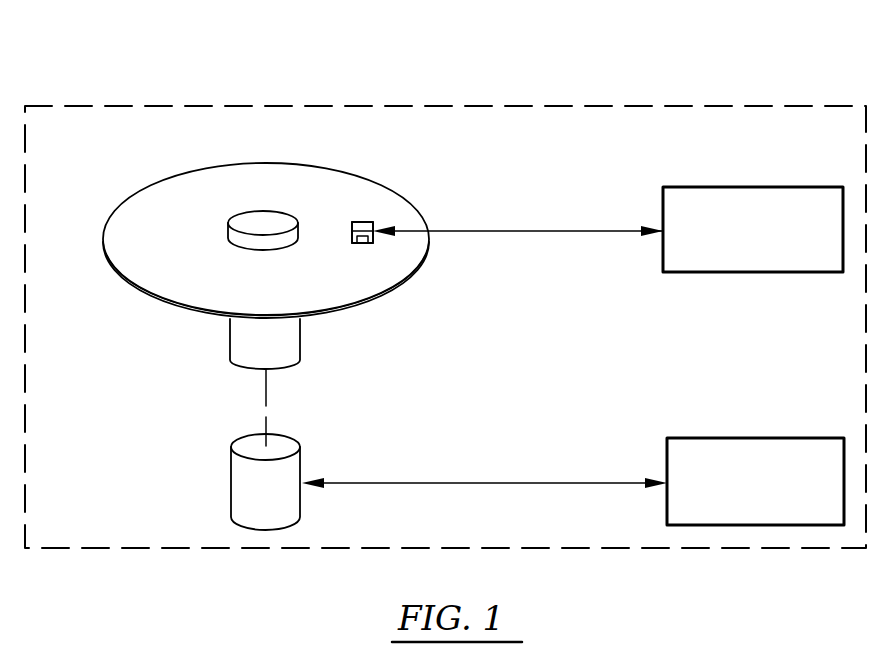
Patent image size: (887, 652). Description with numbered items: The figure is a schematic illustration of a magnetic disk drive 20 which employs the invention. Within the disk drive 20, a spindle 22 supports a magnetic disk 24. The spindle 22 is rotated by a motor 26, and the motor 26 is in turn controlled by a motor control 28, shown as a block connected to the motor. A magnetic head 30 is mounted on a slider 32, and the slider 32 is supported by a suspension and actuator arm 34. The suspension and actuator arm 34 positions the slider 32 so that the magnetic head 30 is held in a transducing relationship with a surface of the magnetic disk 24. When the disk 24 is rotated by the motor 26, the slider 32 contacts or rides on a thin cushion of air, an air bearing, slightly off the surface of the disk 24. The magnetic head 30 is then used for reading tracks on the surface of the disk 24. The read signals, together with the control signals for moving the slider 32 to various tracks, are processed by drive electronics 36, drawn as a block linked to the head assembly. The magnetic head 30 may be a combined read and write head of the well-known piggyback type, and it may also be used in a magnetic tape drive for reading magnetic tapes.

The magnetic disk drive 20 is at (493, 86).
The spindle 22 is at (230, 346).
The magnetic disk 24 is at (143, 203).
The motor 26 is at (230, 489).
The motor control 28 is at (752, 438).
The magnetic head 30 is at (362, 243).
The slider 32 is at (362, 222).
The suspension and actuator arm 34 is at (513, 234).
The drive electronics 36 is at (750, 187).